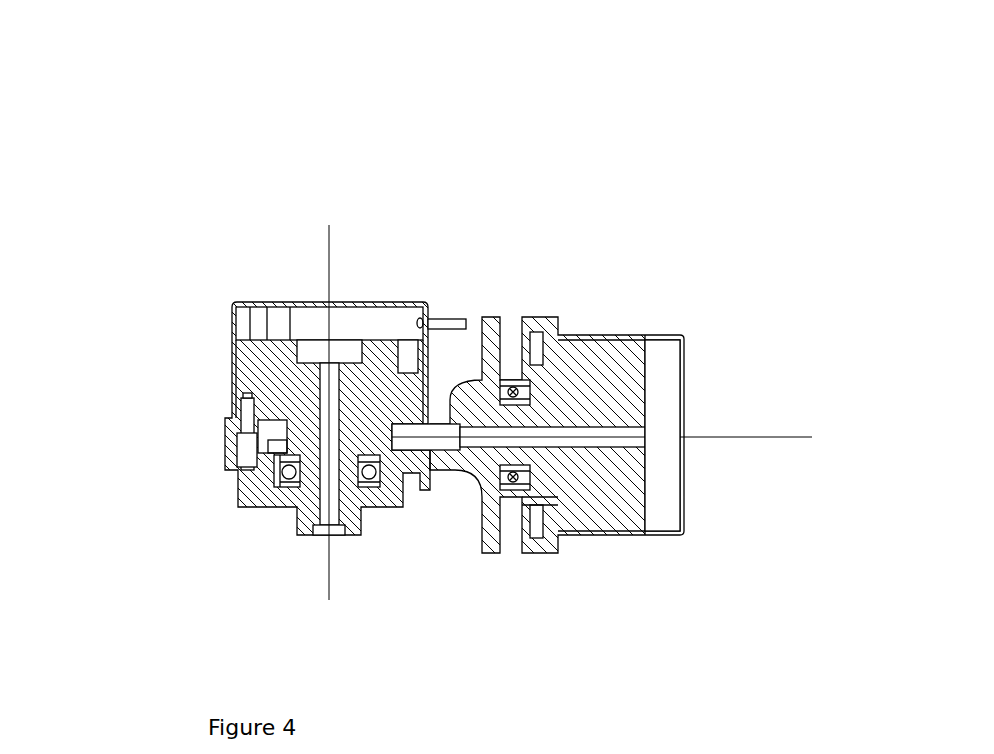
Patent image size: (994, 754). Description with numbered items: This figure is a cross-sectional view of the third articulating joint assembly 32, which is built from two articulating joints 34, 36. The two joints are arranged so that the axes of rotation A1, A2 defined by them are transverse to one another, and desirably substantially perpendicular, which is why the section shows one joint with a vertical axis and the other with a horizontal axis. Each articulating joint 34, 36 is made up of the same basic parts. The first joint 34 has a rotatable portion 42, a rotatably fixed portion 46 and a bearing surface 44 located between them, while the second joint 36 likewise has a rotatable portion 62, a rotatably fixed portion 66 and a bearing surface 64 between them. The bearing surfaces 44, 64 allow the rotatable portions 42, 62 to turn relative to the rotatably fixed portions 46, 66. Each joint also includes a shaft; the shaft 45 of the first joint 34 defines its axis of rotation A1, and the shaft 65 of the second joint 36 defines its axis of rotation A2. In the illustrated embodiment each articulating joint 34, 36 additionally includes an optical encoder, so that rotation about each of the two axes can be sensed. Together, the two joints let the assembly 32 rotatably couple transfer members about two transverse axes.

The third articulating joint assembly 32 is at (447, 140).
The articulating joint 34 is at (305, 252).
The articulating joint 36 is at (703, 441).
The rotatable portion 42 is at (255, 493).
The bearing surface 44 is at (262, 492).
The shaft 45 is at (300, 360).
The rotatably fixed portion 46 is at (286, 387).
The rotatable portion 62 is at (585, 387).
The bearing surface 64 is at (499, 490).
The shaft 65 is at (615, 430).
The rotatably fixed portion 66 is at (538, 553).
The axis of rotation A1 is at (311, 422).
The axis of rotation A2 is at (633, 434).